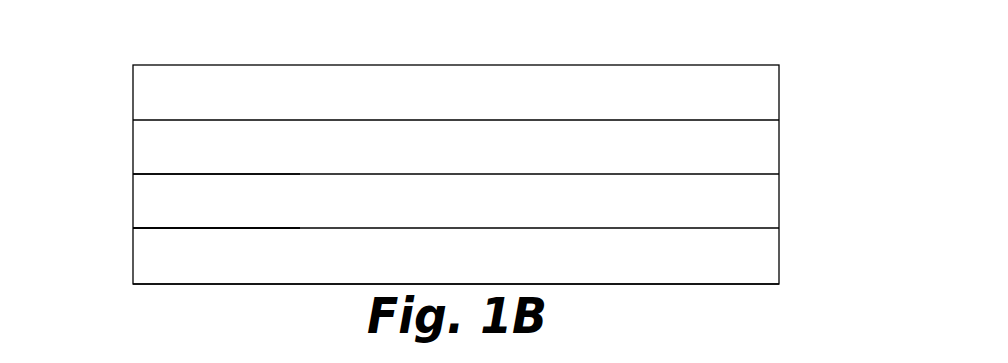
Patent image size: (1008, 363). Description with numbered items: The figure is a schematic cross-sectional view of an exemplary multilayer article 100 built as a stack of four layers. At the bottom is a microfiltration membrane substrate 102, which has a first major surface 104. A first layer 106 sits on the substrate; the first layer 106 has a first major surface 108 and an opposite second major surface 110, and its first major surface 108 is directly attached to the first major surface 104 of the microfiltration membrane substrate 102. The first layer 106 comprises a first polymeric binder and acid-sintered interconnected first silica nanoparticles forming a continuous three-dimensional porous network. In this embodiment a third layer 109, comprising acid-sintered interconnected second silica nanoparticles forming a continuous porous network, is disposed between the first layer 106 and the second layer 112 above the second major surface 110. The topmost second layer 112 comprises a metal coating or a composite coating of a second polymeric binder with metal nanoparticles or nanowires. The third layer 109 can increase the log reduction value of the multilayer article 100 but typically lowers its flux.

The multilayer article 100 is at (776, 36).
The microfiltration membrane substrate 102 is at (422, 268).
The first major surface of the microfiltration membrane substrate 104 is at (170, 228).
The first layer 106 is at (422, 213).
The first major surface of the first layer 108 is at (153, 228).
The third layer 109 is at (422, 158).
The second major surface of the first layer 110 is at (158, 174).
The second layer 112 is at (422, 103).